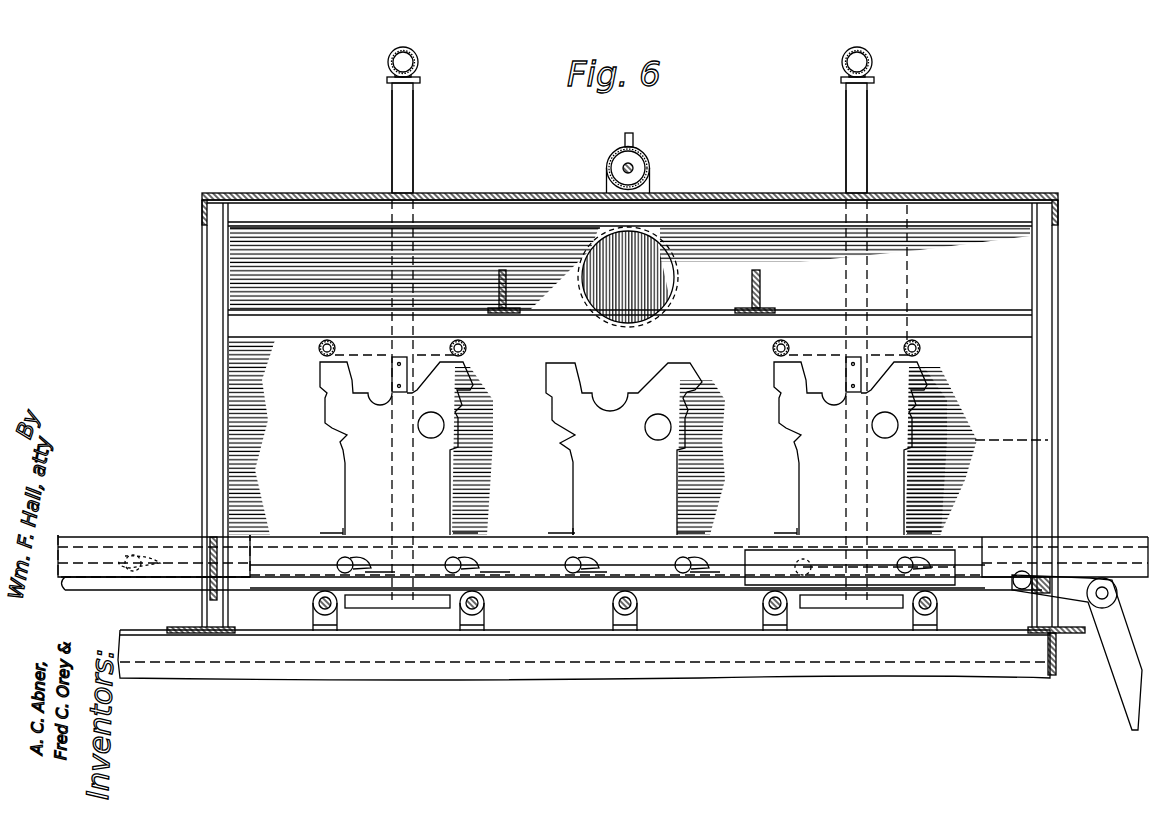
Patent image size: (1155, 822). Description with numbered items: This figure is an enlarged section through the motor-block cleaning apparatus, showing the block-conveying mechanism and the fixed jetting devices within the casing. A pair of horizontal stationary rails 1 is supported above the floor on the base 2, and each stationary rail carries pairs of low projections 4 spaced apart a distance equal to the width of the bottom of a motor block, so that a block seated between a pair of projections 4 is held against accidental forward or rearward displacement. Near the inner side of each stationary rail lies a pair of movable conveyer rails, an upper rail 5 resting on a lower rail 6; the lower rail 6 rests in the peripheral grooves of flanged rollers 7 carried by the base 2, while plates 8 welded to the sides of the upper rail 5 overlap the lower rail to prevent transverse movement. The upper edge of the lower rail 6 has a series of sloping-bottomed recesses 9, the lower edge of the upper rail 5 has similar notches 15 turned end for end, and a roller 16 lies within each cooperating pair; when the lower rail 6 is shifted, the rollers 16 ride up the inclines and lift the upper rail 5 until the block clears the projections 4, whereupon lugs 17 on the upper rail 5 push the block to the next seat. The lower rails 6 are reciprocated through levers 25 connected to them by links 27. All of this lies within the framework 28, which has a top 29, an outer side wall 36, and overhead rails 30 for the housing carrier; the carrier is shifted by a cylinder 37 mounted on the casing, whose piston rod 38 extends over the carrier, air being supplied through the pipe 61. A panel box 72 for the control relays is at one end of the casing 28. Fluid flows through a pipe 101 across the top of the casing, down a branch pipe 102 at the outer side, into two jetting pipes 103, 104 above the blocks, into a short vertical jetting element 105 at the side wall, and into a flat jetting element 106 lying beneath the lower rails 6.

The stationary rails 1 is at (88, 535).
The base 2 is at (672, 679).
The projections 4 is at (245, 535).
The upper rail 5 is at (495, 537).
The lower rail 6 is at (518, 590).
The flanged rollers 7 is at (312, 612).
The plates 8 is at (265, 585).
The recesses 9 is at (337, 570).
The notches 15 is at (362, 530).
The roller 16 is at (592, 537).
The lugs 17 is at (343, 533).
The levers 25 is at (1110, 648).
The link 27 is at (1078, 582).
The framework 28 is at (1045, 292).
The top 29 is at (730, 193).
The rails 30 is at (502, 275).
The outer side wall 36 is at (268, 237).
The cylinder 37 is at (648, 155).
The piston rod 38 is at (622, 167).
The pipe 61 is at (626, 137).
The panel box 72 is at (907, 292).
The pipe 101 is at (388, 58).
The branch pipe 102 is at (392, 106).
The jetting pipe 103 is at (467, 350).
The jetting pipe 104 is at (318, 347).
The vertical jetting element 105 is at (392, 375).
The flat jetting element 106 is at (433, 608).